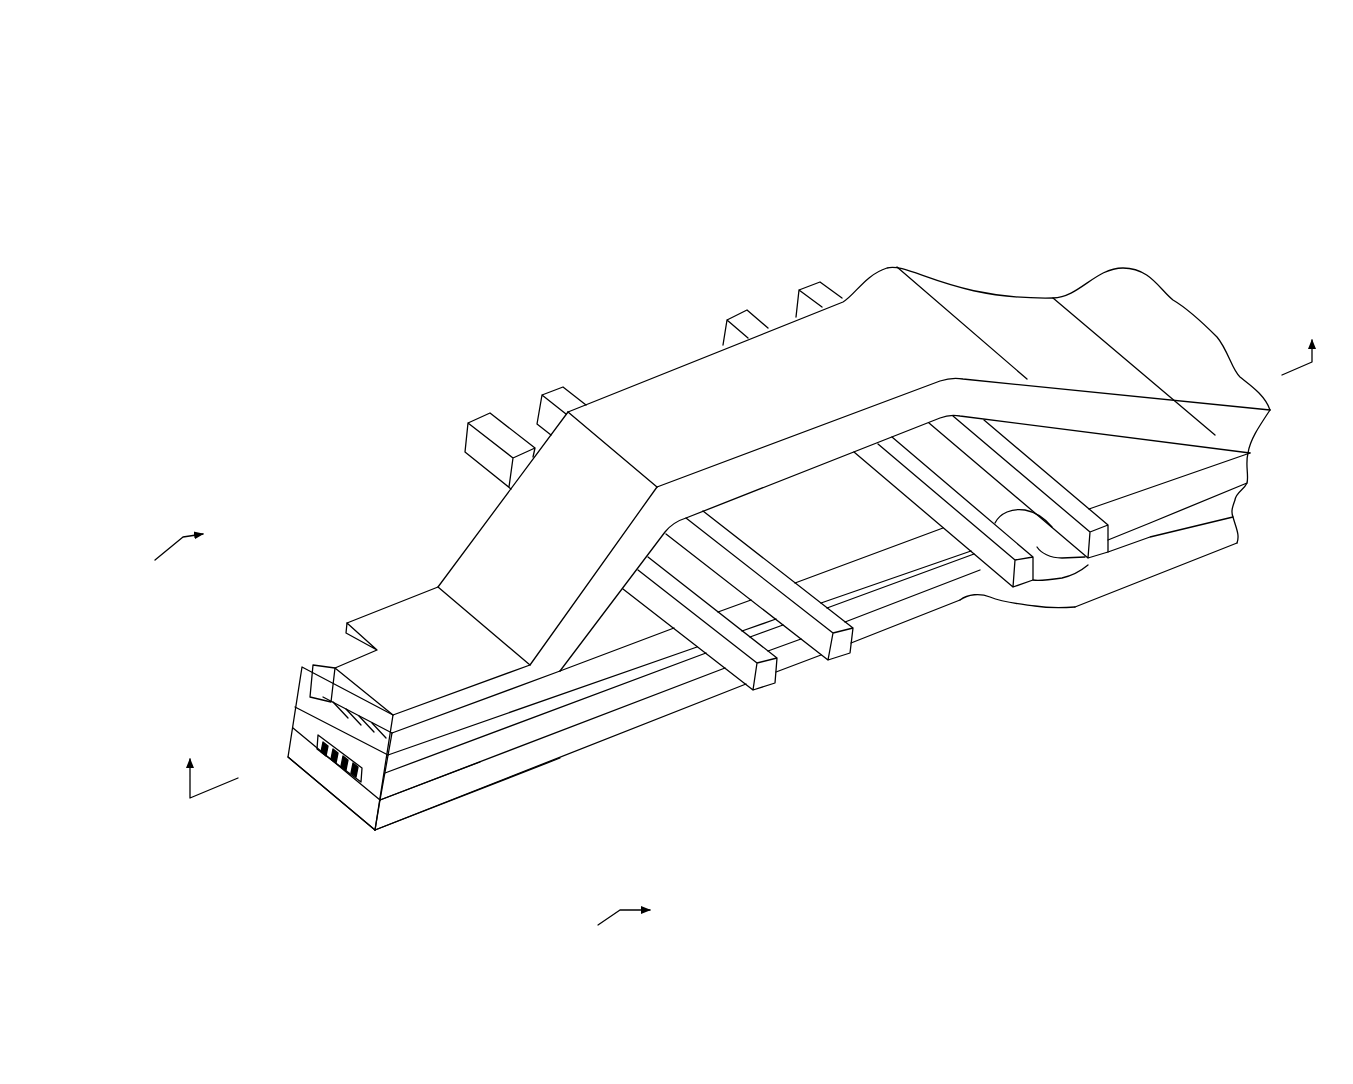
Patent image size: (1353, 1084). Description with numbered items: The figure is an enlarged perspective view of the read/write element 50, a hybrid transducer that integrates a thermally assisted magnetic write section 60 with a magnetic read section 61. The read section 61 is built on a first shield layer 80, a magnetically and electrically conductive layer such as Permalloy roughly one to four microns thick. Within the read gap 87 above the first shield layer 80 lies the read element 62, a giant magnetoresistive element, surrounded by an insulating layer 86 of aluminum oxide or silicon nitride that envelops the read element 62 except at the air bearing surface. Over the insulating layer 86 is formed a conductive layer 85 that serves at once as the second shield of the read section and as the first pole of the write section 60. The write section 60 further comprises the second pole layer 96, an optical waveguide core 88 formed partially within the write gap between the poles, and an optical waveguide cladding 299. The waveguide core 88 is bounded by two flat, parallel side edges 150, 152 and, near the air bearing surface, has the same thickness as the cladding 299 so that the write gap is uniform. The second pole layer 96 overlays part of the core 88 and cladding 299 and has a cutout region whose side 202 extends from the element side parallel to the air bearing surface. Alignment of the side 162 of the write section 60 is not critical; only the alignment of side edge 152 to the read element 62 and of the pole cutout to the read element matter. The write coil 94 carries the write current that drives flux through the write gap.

The read/write element 50 is at (664, 110).
The thermally assisted magnetic write section 60 is at (409, 543).
The magnetic read section 61 is at (322, 800).
The read element 62 is at (327, 752).
The first shield layer 80 is at (503, 772).
The second shield layer / first pole layer 85 is at (300, 702).
The insulating layer 86 is at (407, 782).
The read gap 87 is at (370, 788).
The optical waveguide core 88 is at (316, 700).
The write coil 94 is at (817, 288).
The second pole layer 96 is at (480, 690).
The side edge 150 is at (303, 667).
The side edge 152 is at (386, 810).
The side 162 is at (489, 798).
The side 202 is at (348, 623).
The optical waveguide cladding 299 is at (322, 690).